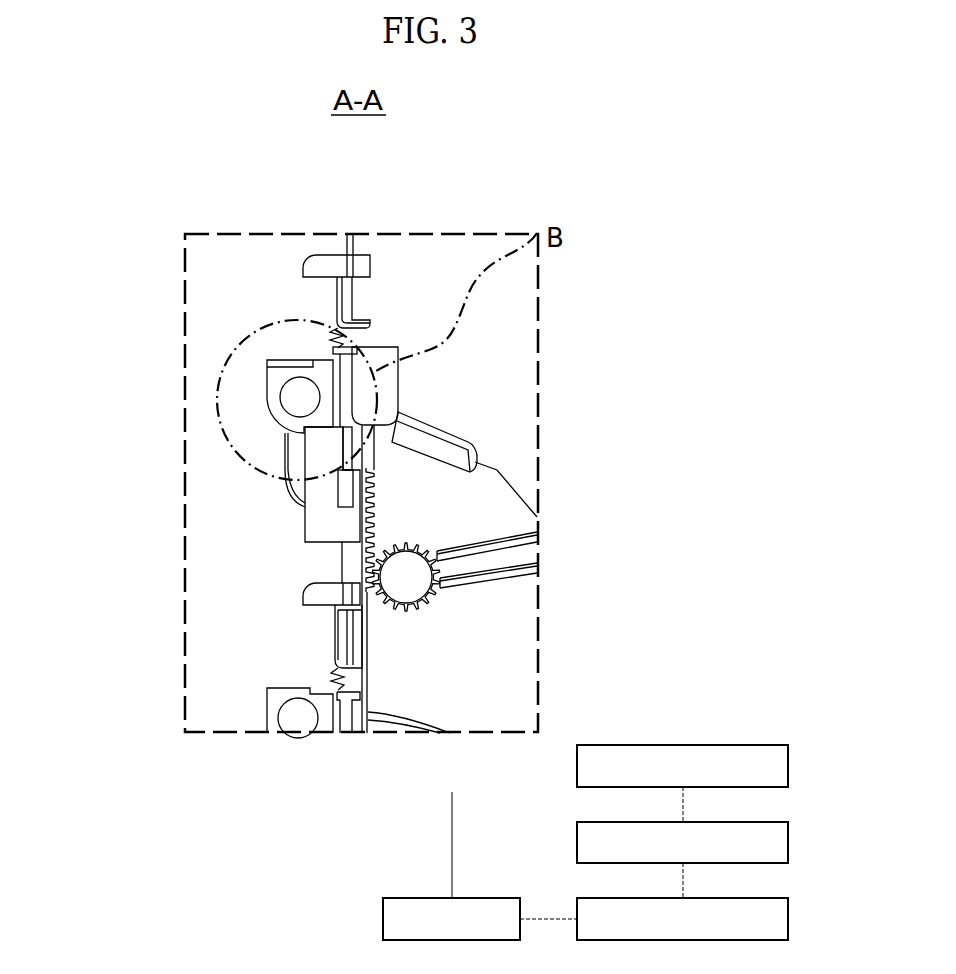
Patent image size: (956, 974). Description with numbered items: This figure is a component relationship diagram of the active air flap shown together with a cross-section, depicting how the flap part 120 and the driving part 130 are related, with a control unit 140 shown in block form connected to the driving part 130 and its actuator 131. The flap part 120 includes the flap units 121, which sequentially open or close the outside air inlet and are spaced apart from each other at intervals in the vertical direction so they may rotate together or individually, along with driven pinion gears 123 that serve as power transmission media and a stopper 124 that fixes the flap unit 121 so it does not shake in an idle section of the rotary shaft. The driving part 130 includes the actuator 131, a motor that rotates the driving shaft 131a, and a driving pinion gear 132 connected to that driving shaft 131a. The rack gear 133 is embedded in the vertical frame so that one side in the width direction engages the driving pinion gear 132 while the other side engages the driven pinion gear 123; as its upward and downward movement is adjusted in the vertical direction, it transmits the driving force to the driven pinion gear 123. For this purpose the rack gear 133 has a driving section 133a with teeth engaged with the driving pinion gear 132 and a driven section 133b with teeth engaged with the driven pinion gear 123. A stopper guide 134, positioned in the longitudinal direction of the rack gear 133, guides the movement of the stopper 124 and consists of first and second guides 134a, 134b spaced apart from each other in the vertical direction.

The flap part 120 is at (493, 446).
The flap unit 121 is at (487, 520).
The driven pinion gear 123 is at (300, 360).
The stopper 124 is at (302, 395).
The driving part 130 is at (790, 840).
The actuator 131 is at (790, 917).
The driving shaft 131a is at (480, 933).
The driving pinion gear 132 is at (407, 580).
The rack gear 133 is at (358, 440).
The driving section 133a is at (375, 507).
The driven section 133b is at (400, 420).
The stopper guide 134 is at (202, 411).
The first guide 134a is at (327, 267).
The second guide 134b is at (300, 590).
The control unit 140 is at (790, 763).